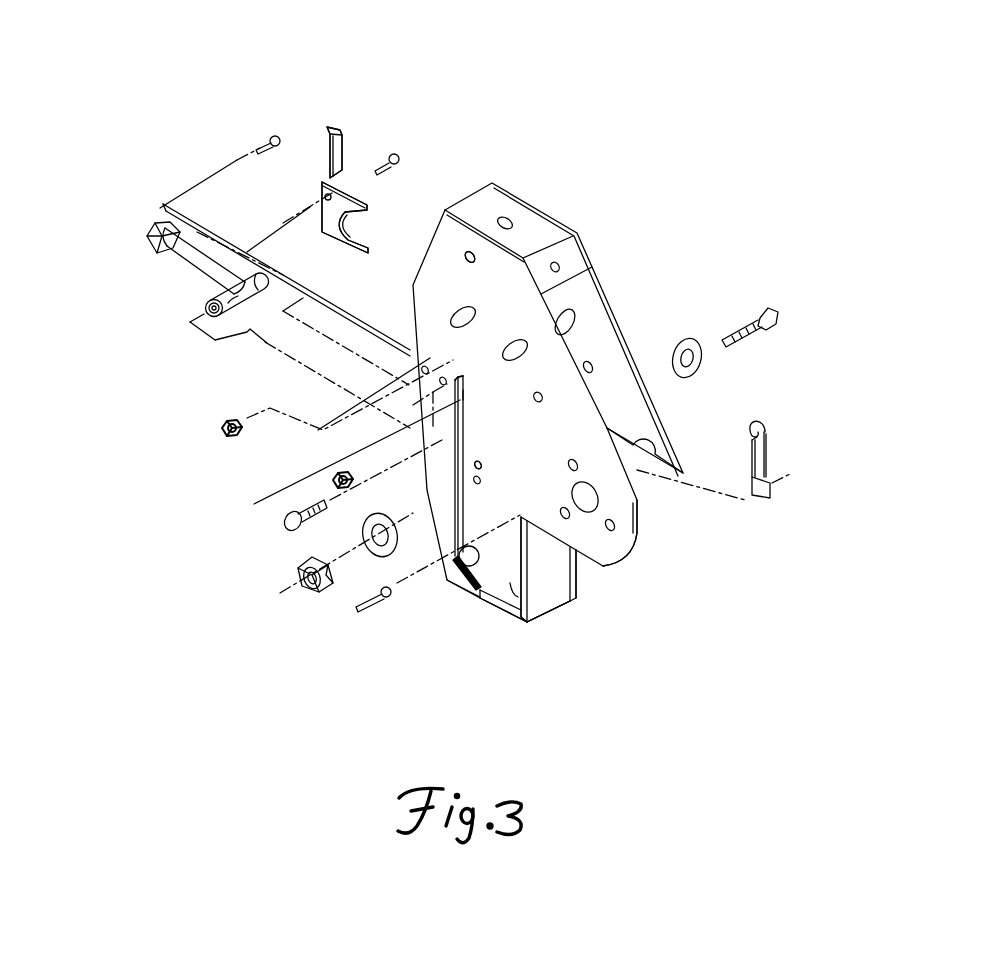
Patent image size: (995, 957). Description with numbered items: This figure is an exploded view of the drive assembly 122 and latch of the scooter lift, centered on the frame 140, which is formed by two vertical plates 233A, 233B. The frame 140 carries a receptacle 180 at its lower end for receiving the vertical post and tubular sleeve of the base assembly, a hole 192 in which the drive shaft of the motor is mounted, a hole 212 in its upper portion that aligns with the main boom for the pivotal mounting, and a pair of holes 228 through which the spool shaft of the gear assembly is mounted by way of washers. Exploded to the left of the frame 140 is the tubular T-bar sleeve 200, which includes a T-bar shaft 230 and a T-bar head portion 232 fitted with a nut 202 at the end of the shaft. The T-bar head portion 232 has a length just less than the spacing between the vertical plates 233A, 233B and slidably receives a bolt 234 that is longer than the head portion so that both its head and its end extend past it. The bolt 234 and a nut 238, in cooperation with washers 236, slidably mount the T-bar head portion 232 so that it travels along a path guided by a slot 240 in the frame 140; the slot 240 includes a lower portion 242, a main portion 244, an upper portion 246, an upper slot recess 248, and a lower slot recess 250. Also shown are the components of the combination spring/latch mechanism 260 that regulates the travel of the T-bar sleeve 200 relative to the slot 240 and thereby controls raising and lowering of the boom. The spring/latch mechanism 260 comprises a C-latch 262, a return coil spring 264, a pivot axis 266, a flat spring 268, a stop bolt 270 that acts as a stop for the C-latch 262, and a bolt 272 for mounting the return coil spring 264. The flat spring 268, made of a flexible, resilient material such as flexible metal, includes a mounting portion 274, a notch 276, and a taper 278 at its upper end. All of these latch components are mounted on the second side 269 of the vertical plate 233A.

The drive assembly 122 is at (557, 106).
The frame 140 is at (548, 578).
The receptacle 180 is at (518, 623).
The hole 192 is at (638, 532).
The T-bar sleeve 200 is at (182, 273).
The nut 202 is at (158, 220).
The hole 212 is at (466, 252).
The holes 228 is at (513, 338).
The T-bar shaft 230 is at (200, 285).
The T-bar head portion 232 is at (227, 322).
The vertical plate 233A is at (545, 606).
The vertical plate 233B is at (590, 548).
The bolt 234 is at (745, 335).
The washers 236 is at (693, 335).
The nut 238 is at (308, 598).
The slot 240 is at (472, 433).
The lower portion 242 is at (463, 588).
The main portion 244 is at (480, 470).
The upper portion 246 is at (470, 385).
The upper slot recess 248 is at (467, 398).
The lower slot recess 250 is at (441, 562).
The spring/latch mechanism 260 is at (362, 142).
The C-latch 262 is at (332, 240).
The return coil spring 264 is at (329, 150).
The pivot axis 266 is at (398, 160).
The flat spring 268 is at (774, 443).
The second side 269 is at (413, 310).
The stop bolt 270 is at (293, 513).
The bolt 272 is at (252, 140).
The mounting portion 274 is at (755, 500).
The notch 276 is at (748, 448).
The taper 278 is at (758, 420).